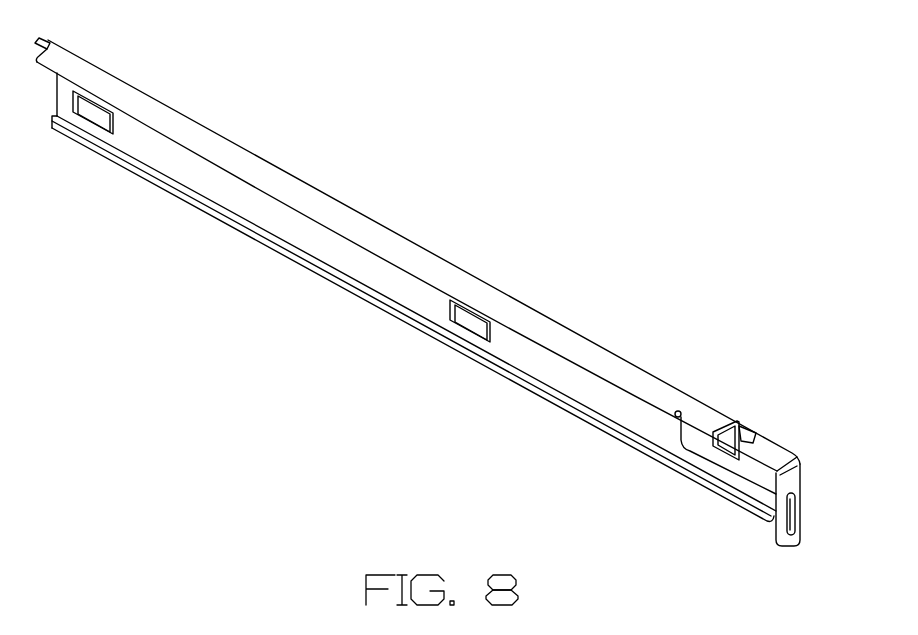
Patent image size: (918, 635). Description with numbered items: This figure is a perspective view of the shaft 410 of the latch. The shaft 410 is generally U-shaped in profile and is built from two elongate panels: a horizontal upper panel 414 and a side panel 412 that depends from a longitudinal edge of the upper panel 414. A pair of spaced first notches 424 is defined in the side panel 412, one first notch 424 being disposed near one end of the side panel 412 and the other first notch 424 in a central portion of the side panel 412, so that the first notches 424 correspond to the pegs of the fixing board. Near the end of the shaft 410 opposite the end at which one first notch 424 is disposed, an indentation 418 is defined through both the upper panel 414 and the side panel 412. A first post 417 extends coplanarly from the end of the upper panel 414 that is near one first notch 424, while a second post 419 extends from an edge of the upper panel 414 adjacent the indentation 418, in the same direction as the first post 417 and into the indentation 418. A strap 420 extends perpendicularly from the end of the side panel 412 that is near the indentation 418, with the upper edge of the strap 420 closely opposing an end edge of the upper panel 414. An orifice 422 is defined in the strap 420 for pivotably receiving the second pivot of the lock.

The shaft 410 is at (452, 283).
The side panel 412 is at (453, 295).
The upper panel 414 is at (437, 249).
The first post 417 is at (46, 40).
The indentation 418 is at (757, 409).
The second post 419 is at (755, 428).
The strap 420 is at (778, 512).
The orifice 422 is at (828, 514).
The first notch 424 is at (97, 113).